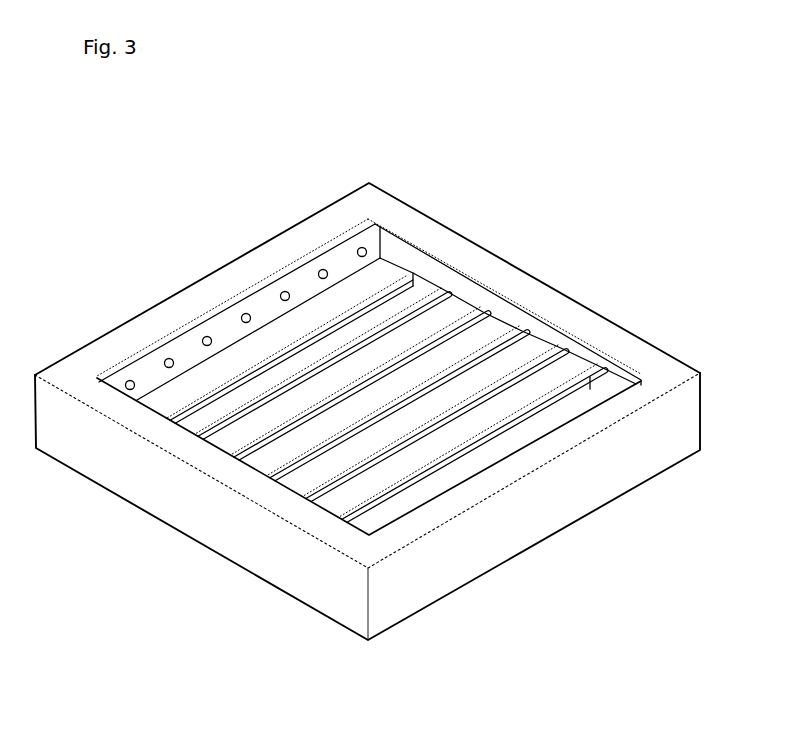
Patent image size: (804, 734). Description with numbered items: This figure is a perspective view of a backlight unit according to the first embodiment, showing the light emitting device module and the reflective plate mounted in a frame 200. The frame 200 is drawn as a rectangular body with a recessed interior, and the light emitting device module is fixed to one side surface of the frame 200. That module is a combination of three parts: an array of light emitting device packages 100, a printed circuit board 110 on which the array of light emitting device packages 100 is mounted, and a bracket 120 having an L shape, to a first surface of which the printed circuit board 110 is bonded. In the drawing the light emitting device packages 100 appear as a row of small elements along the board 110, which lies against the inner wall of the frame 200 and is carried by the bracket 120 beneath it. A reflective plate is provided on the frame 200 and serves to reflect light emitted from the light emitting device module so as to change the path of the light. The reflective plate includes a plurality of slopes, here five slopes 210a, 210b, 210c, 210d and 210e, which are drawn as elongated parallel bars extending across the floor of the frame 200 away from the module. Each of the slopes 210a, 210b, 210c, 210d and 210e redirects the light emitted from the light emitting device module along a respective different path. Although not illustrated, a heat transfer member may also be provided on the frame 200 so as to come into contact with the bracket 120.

The frame 200 is at (307, 229).
The light emitting device package 100 is at (283, 291).
The printed circuit board 110 is at (225, 323).
The bracket 120 is at (202, 380).
The slope 210a is at (447, 290).
The slope 210b is at (484, 309).
The slope 210c is at (523, 328).
The slope 210d is at (564, 347).
The slope 210e is at (604, 366).